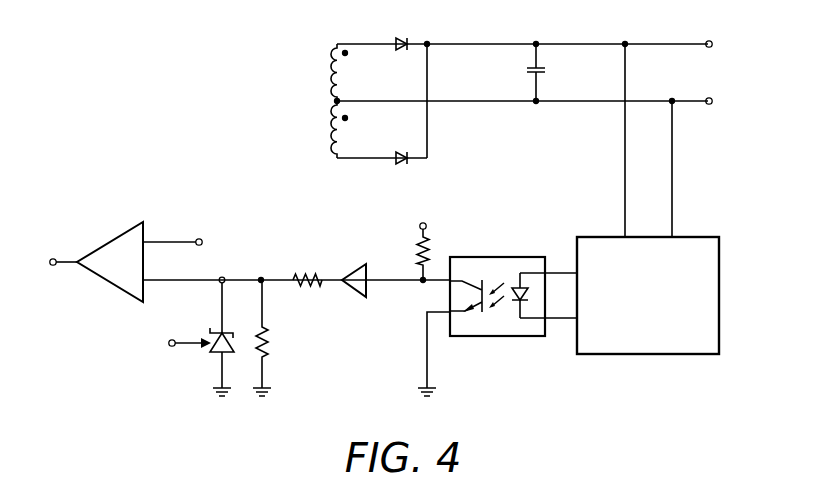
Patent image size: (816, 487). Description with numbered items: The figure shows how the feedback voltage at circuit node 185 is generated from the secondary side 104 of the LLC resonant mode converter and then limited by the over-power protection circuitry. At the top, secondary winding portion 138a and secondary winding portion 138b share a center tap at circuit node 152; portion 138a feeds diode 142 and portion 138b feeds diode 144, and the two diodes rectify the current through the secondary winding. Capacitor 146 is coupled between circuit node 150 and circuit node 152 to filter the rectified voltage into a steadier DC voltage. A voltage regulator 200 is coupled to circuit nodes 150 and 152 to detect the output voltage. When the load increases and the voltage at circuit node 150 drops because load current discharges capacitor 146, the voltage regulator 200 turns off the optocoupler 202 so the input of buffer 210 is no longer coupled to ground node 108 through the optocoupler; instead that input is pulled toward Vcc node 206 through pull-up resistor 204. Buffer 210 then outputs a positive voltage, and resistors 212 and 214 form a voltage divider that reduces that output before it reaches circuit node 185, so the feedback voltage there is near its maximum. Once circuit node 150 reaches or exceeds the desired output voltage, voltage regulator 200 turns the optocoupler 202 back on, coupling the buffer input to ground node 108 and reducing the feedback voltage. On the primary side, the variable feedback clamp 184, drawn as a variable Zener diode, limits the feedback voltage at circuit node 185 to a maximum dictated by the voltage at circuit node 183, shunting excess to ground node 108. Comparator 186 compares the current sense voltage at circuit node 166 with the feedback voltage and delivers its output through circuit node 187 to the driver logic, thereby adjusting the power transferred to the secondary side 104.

The secondary side 104 is at (152, 45).
The secondary winding portion 138a is at (333, 68).
The secondary winding portion 138b is at (333, 135).
The diode 142 is at (403, 37).
The diode 144 is at (403, 165).
The capacitor 146 is at (548, 70).
The circuit node 150 is at (713, 43).
The circuit node 152 is at (713, 103).
The voltage regulator 200 is at (720, 297).
The optocoupler 202 is at (498, 257).
The pull-up resistor 204 is at (418, 252).
The Vcc node 206 is at (427, 225).
The buffer 210 is at (355, 266).
The resistor 212 is at (300, 272).
The resistor 214 is at (268, 345).
The circuit node 183 is at (168, 345).
The variable feedback clamp 184 is at (217, 355).
The circuit node 185 is at (224, 276).
The comparator 186 is at (112, 240).
The circuit node 187 is at (52, 257).
The circuit node 166 is at (201, 237).
The ground node 108 is at (215, 392).